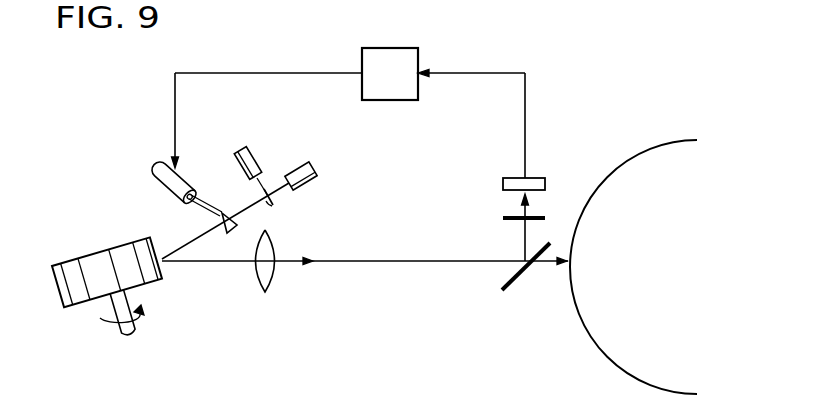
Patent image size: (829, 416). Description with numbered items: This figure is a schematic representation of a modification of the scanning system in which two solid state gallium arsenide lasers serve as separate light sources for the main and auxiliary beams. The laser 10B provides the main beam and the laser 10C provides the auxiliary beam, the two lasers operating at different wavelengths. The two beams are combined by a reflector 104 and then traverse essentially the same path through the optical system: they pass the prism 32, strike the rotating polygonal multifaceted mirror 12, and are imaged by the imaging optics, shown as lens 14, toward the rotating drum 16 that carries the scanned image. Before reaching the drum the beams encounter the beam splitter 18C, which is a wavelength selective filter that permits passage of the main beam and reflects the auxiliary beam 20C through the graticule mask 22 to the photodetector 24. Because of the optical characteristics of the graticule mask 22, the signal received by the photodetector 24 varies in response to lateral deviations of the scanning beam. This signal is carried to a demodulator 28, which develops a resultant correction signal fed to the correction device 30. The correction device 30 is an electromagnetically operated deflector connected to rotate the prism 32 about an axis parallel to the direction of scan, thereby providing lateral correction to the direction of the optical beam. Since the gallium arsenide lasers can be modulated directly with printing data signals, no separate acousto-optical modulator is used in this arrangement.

The rotating polygonal multifaceted mirror 12 is at (86, 256).
The imaging optics 14 is at (268, 283).
The rotating drum 16 is at (582, 327).
The beam splitter 18C is at (502, 283).
The auxiliary beam 20C is at (523, 238).
The graticule mask 22 is at (504, 215).
The photodetector 24 is at (536, 177).
The demodulator 28 is at (388, 55).
The correction device 30 is at (161, 180).
The prism 32 is at (223, 212).
The laser 10B is at (317, 170).
The laser 10C is at (259, 151).
The reflector 104 is at (273, 208).